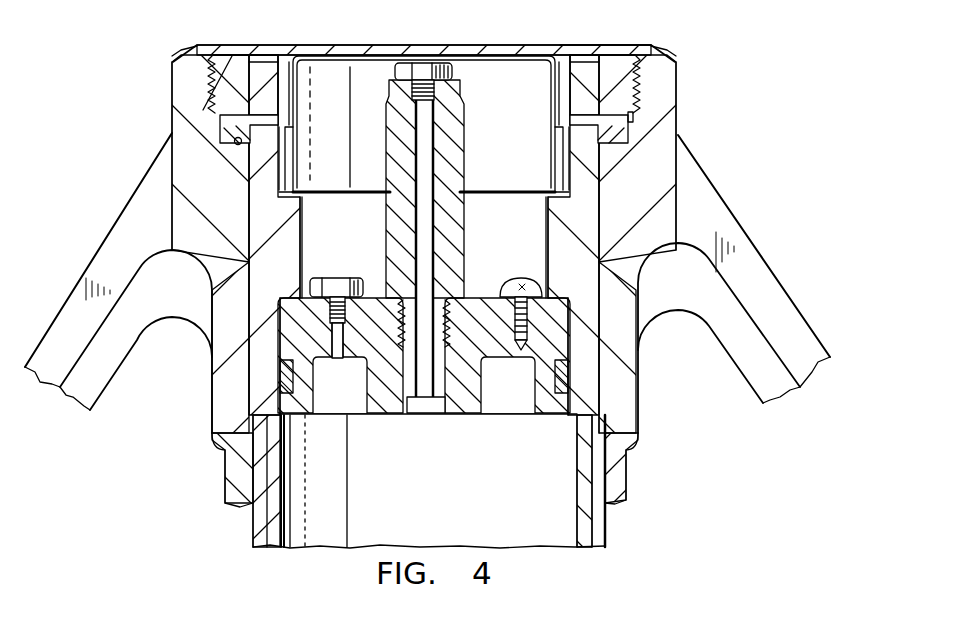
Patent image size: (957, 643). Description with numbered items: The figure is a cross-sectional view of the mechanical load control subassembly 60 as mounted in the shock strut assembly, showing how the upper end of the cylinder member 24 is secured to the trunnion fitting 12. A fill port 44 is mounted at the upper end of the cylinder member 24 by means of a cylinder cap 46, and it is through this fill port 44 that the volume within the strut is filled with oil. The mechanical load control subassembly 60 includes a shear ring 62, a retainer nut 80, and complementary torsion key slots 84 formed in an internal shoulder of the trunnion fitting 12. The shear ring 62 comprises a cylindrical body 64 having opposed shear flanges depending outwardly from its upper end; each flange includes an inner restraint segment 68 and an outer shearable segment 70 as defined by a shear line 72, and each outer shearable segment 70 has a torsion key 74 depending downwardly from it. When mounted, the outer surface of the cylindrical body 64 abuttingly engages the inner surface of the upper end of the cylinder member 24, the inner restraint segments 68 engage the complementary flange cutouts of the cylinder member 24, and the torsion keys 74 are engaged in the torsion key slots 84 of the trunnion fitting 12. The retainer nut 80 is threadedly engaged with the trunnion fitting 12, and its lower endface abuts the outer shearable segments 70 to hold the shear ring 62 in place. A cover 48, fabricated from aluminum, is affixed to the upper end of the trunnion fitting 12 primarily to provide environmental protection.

The trunnion fitting 12 is at (173, 127).
The cylinder member 24 is at (258, 281).
The fill port 44 is at (448, 122).
The cylinder cap 46 is at (483, 295).
The cover 48 is at (348, 45).
The mechanical load control subassembly 60 is at (552, 40).
The shear ring 62 is at (294, 100).
The cylindrical body 64 is at (251, 192).
The inner restraint segment 68 is at (289, 110).
The outer shearable segment 70 is at (209, 96).
The shear line 72 is at (272, 108).
The torsion key 74 is at (227, 148).
The retainer nut 80 is at (232, 72).
The torsion key slot 84 is at (240, 145).